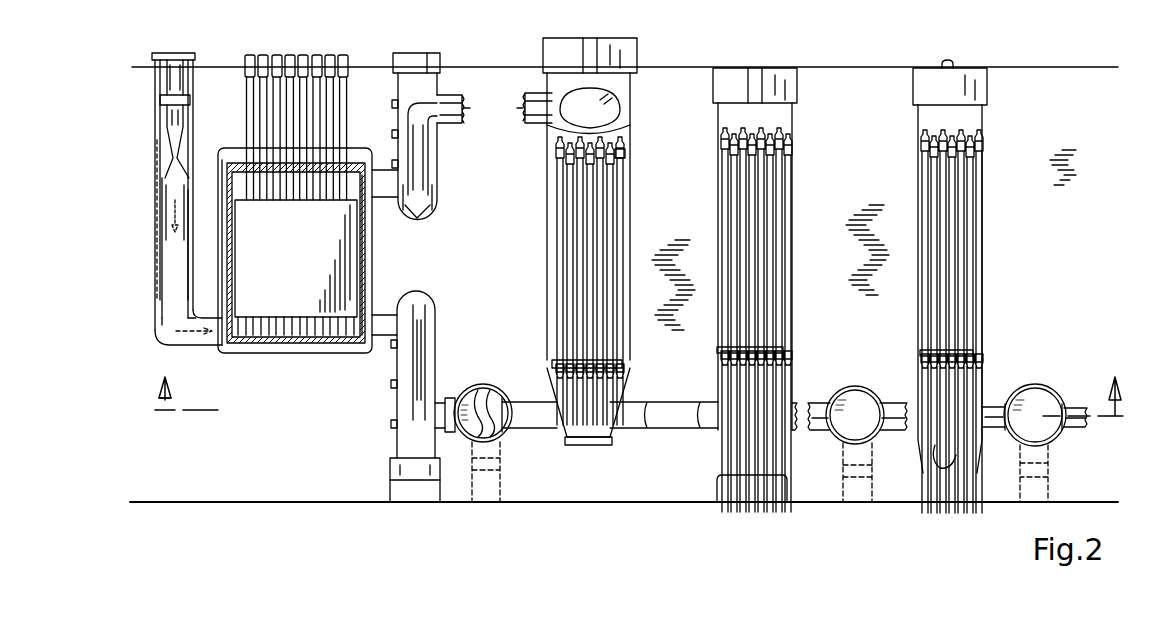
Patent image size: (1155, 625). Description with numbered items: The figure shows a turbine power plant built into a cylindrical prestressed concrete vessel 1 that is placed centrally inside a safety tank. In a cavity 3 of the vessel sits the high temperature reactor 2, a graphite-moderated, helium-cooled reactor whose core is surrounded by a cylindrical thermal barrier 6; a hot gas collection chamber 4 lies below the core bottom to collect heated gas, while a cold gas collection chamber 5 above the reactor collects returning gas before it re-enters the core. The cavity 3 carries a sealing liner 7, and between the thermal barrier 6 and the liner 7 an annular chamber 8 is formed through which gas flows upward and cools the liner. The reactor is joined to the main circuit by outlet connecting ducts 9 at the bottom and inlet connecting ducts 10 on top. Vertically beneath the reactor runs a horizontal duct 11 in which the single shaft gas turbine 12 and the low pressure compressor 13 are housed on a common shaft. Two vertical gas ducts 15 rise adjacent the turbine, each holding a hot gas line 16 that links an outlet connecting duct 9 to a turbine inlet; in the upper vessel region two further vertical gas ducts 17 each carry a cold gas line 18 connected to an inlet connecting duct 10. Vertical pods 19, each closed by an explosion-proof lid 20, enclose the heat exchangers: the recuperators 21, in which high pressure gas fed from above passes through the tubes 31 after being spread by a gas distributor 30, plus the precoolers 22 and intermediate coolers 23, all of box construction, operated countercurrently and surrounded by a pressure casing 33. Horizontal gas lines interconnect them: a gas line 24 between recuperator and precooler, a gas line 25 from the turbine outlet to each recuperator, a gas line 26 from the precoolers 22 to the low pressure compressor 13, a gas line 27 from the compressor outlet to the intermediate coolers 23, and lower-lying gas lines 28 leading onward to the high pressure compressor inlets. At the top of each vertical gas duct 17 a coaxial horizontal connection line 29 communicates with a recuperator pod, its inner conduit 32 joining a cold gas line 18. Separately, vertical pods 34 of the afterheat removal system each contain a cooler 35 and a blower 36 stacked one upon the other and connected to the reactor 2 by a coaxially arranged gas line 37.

The prestressed concrete vessel 1 is at (845, 304).
The high temperature reactor 2 is at (283, 266).
The cavity 3 is at (236, 155).
The hot gas collection chamber 4 is at (272, 336).
The cold gas collection chamber 5 is at (240, 190).
The thermal barrier 6 is at (372, 270).
The sealing liner 7 is at (372, 232).
The annular chamber 8 is at (226, 273).
The outlet connecting ducts 9 is at (376, 344).
The inlet connecting ducts 10 is at (375, 162).
The horizontal duct 11 is at (505, 436).
The single shaft gas turbine 12 is at (470, 434).
The low pressure compressor 13 is at (862, 400).
The vertical gas ducts 15 is at (428, 330).
The hot gas line 16 is at (417, 357).
The vertical gas ducts 17 is at (430, 180).
The cold gas line 18 is at (420, 140).
The vertical pods 19 is at (560, 70).
The explosion-proof lid 20 is at (413, 60).
The recuperators 21 is at (615, 183).
The precoolers 22 is at (770, 182).
The intermediate coolers 23 is at (962, 190).
The gas line 24 is at (690, 433).
The gas line 25 is at (555, 432).
The gas line 26 is at (798, 431).
The gas line 27 is at (1070, 410).
The gas lines 28 is at (940, 450).
The horizontal connection line 29 is at (448, 93).
The gas distributor 30 is at (626, 136).
The tubes 31 is at (625, 155).
The inner conduit 32 is at (518, 108).
The pressure casing 33 is at (716, 372).
The vertical pods 34 is at (157, 170).
The cooler 35 is at (170, 244).
The blower 36 is at (166, 129).
The gas line 37 is at (208, 348).